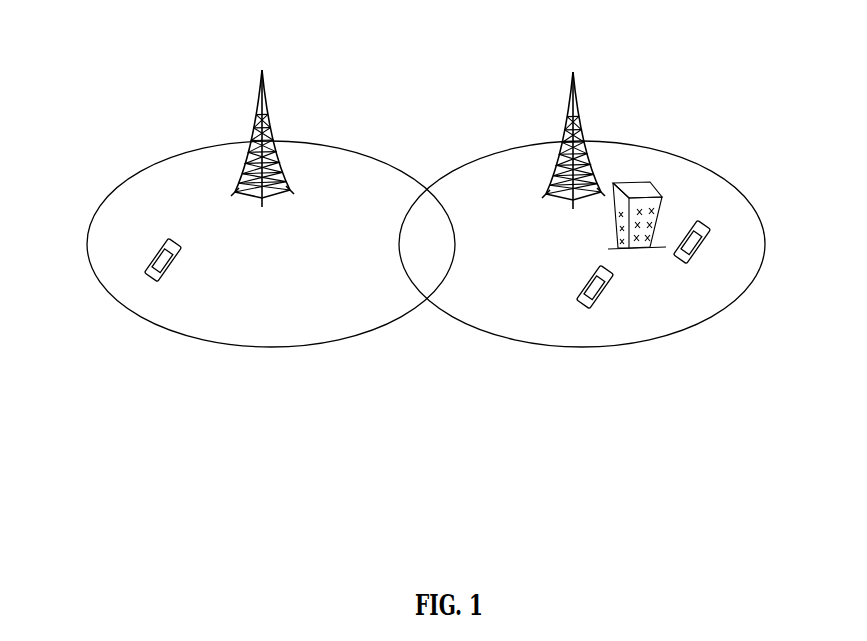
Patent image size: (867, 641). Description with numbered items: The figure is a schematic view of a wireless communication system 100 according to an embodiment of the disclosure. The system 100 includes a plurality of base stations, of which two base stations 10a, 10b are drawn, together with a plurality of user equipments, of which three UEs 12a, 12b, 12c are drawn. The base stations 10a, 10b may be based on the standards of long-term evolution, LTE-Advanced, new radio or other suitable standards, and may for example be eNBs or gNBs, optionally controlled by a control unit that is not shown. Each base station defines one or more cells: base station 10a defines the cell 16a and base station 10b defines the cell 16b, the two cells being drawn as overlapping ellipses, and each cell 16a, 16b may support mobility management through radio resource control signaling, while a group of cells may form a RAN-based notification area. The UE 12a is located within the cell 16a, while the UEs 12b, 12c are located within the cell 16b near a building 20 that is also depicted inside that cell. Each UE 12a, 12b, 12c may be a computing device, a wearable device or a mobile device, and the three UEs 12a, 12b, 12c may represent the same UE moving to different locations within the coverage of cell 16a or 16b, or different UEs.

The wireless communication system 100 is at (793, 93).
The base station 10a is at (274, 85).
The base station 10b is at (606, 82).
The UE 12a is at (136, 238).
The UE 12b is at (720, 264).
The UE 12c is at (613, 309).
The cell 16a is at (307, 309).
The cell 16b is at (527, 309).
The building 20 is at (672, 186).